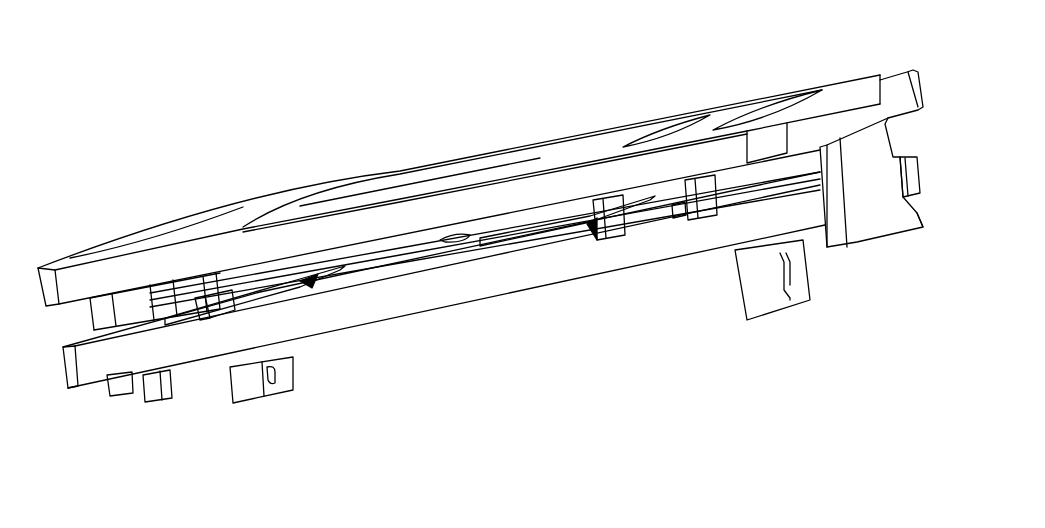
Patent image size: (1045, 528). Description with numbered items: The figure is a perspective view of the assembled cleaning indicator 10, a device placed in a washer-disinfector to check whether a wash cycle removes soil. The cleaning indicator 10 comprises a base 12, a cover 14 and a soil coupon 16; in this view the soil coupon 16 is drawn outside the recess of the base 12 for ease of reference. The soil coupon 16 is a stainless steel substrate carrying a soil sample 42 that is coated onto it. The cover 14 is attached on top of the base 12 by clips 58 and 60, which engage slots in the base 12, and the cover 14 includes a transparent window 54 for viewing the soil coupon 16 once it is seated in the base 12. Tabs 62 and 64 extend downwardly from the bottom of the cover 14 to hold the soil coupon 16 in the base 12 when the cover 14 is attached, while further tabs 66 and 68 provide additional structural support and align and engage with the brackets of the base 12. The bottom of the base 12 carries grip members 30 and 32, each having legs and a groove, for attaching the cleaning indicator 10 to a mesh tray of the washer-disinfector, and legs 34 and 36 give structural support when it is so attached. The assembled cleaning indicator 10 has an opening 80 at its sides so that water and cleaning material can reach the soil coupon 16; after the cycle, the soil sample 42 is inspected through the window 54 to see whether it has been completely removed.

The cleaning indicator 10 is at (134, 171).
The base 12 is at (373, 308).
The cover 14 is at (900, 95).
The soil coupon 16 is at (417, 250).
The grip member 30 is at (242, 385).
The grip member 32 is at (763, 320).
The leg 34 is at (152, 395).
The leg 36 is at (913, 213).
The soil sample 42 is at (448, 240).
The transparent window 54 is at (585, 147).
The clip 58 is at (117, 388).
The clip 60 is at (870, 210).
The tab 62 is at (230, 297).
The tab 64 is at (610, 225).
The tab 66 is at (705, 200).
The tab 68 is at (167, 307).
The opening 80 is at (517, 220).